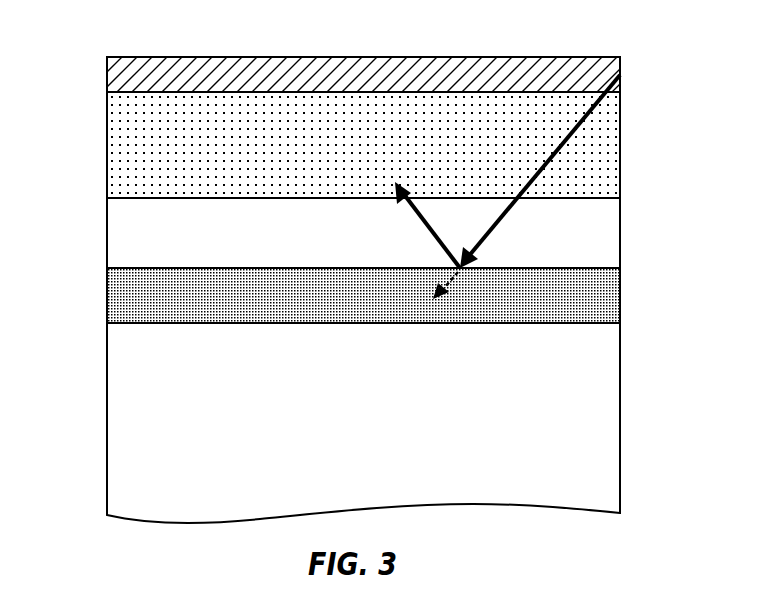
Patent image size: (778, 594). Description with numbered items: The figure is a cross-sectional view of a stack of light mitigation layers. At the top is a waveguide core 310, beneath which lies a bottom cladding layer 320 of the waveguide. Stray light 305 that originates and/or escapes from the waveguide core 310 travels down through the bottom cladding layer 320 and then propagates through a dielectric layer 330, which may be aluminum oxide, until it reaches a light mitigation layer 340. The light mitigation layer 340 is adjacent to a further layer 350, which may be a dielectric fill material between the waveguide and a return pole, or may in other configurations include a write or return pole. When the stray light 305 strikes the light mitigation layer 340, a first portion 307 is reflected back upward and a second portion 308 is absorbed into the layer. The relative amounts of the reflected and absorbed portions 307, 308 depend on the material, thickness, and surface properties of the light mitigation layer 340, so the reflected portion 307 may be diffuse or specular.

The stray light 305 is at (596, 109).
The first portion 307 is at (415, 215).
The second portion 308 is at (457, 279).
The waveguide core 310 is at (110, 68).
The bottom cladding layer 320 is at (113, 147).
The dielectric layer 330 is at (127, 224).
The light mitigation layer 340 is at (121, 296).
The layer 350 is at (127, 388).